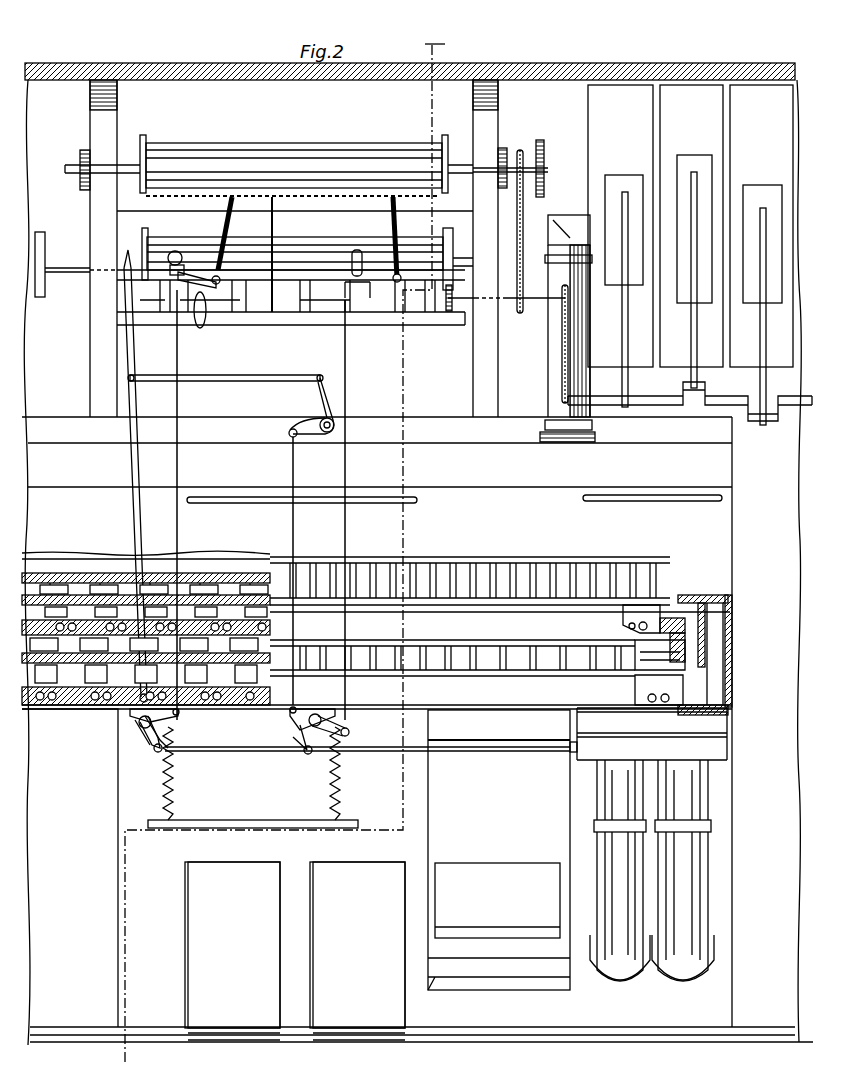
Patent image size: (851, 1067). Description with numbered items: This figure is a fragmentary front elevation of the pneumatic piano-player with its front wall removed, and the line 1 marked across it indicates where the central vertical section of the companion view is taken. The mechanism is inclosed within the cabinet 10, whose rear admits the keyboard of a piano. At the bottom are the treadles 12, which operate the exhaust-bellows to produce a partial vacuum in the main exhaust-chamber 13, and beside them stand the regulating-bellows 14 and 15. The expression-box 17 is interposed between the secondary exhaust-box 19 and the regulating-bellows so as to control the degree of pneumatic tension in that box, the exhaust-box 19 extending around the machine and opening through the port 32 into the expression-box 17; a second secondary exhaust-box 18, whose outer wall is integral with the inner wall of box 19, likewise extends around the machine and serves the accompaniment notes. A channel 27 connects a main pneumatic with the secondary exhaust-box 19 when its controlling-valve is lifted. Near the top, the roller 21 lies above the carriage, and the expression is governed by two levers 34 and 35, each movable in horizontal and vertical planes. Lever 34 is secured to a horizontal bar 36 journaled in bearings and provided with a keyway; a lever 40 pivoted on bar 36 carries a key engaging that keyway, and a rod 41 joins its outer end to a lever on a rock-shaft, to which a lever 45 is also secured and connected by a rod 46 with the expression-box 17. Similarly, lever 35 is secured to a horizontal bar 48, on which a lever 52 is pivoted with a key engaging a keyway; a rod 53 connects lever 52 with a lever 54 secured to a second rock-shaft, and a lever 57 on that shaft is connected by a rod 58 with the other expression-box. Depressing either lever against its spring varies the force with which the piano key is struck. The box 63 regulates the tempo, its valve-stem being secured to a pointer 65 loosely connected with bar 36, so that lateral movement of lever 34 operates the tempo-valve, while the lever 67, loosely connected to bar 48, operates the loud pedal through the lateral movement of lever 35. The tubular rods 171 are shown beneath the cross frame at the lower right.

The section line 1 is at (92, 1055).
The cabinet 10 is at (655, 63).
The treadles 12 is at (295, 951).
The main exhaust-chamber 13 is at (253, 777).
The regulating-bellows 14 is at (70, 868).
The regulating-bellows 15 is at (499, 850).
The expression-box 17 is at (646, 751).
The tubular rods 171 is at (615, 790).
The secondary exhaust-box 18 is at (696, 655).
The secondary exhaust-box 19 is at (93, 617).
The roller 21 is at (269, 208).
The channel 27 is at (238, 588).
The port 32 is at (697, 706).
The lever 34 is at (382, 305).
The lever 35 is at (206, 326).
The horizontal bar 36 is at (293, 282).
The lever 40 is at (340, 290).
The rod 41 is at (348, 393).
The lever 45 is at (305, 738).
The rod 46 is at (455, 750).
The horizontal bar 48 is at (212, 287).
The lever 52 is at (176, 252).
The rod 53 is at (180, 468).
The lever 54 is at (168, 718).
The lever 57 is at (152, 748).
The rod 58 is at (242, 752).
The tempo-regulating box 63 is at (40, 298).
The pointer 65 is at (274, 228).
The lever 67 is at (130, 350).